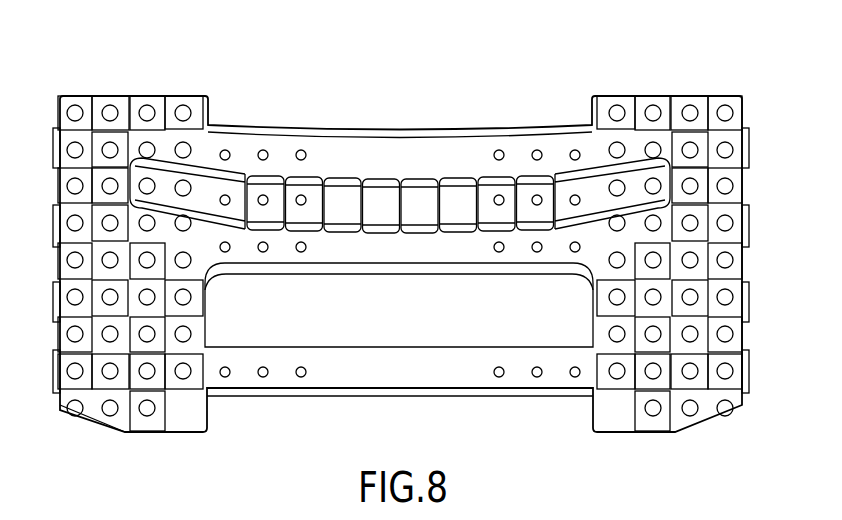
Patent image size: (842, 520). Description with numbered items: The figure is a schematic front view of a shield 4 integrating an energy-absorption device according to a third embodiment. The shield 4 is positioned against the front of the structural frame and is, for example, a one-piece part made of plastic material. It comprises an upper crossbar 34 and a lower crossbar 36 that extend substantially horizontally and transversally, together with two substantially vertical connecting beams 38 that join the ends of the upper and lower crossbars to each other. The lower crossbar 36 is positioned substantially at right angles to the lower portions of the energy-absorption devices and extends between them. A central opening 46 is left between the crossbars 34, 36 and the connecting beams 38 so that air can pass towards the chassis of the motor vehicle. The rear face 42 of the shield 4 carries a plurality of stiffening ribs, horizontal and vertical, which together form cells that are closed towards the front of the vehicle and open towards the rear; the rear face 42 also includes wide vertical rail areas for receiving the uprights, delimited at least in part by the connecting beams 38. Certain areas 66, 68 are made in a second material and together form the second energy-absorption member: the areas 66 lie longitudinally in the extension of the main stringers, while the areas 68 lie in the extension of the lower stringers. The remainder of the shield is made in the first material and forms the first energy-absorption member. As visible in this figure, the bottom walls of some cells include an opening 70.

The shield 4 is at (461, 111).
The upper crossbar 34 is at (396, 128).
The lower crossbar 36 is at (320, 398).
The vertical connecting beams 38 is at (44, 290).
The rear face 42 is at (171, 393).
The central opening 46 is at (390, 318).
The areas in second material 66 is at (114, 169).
The areas in second material 68 is at (134, 333).
The opening 70 is at (147, 110).